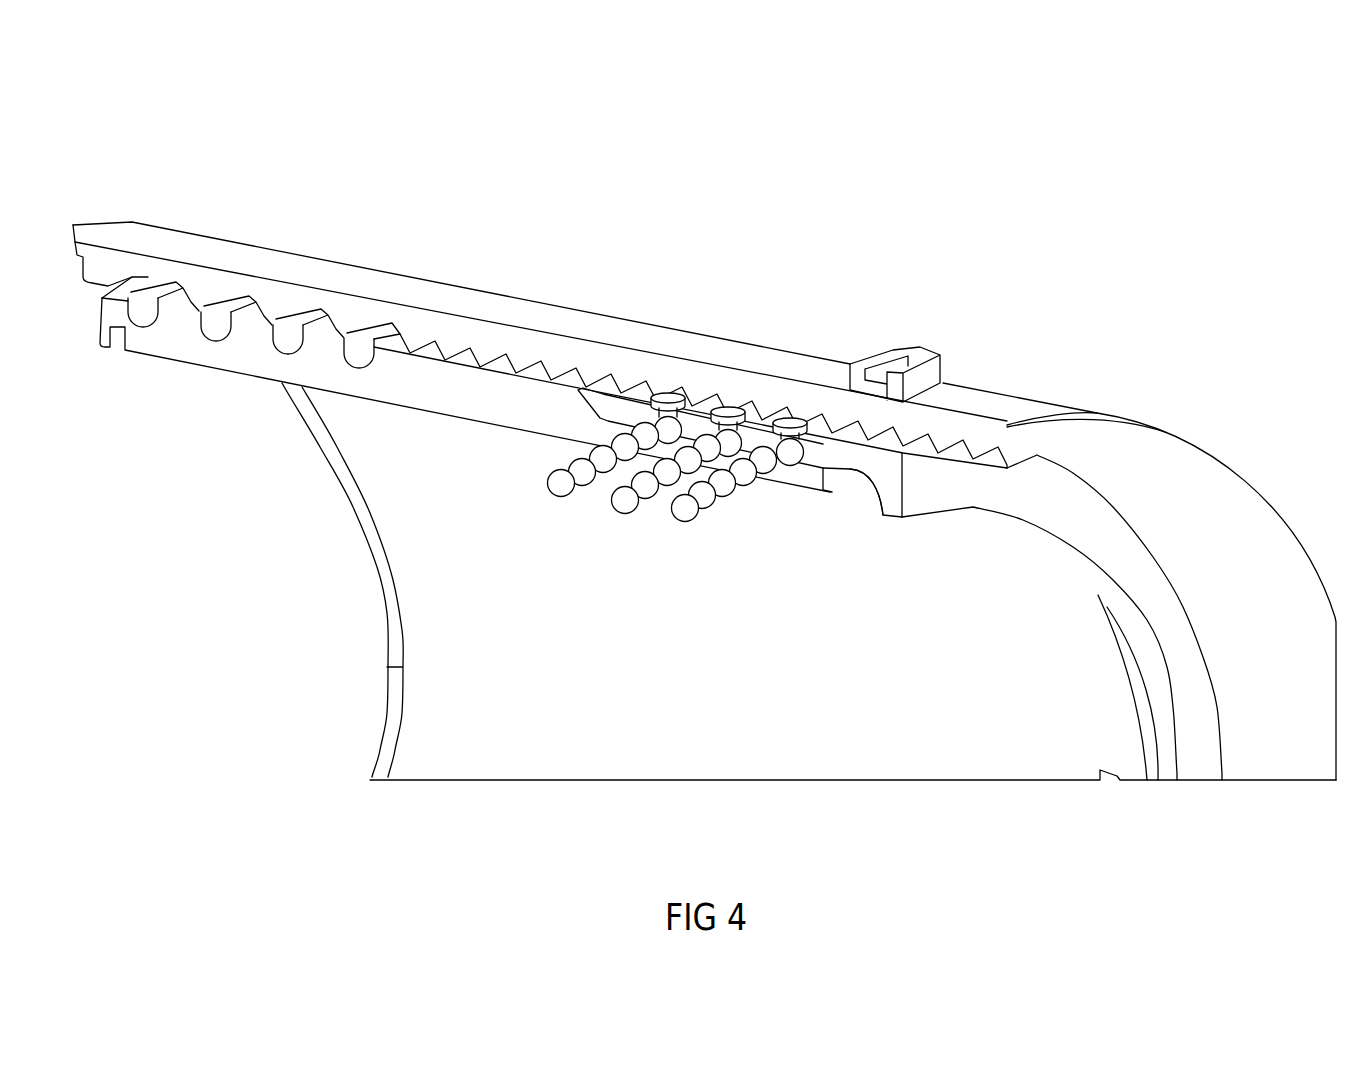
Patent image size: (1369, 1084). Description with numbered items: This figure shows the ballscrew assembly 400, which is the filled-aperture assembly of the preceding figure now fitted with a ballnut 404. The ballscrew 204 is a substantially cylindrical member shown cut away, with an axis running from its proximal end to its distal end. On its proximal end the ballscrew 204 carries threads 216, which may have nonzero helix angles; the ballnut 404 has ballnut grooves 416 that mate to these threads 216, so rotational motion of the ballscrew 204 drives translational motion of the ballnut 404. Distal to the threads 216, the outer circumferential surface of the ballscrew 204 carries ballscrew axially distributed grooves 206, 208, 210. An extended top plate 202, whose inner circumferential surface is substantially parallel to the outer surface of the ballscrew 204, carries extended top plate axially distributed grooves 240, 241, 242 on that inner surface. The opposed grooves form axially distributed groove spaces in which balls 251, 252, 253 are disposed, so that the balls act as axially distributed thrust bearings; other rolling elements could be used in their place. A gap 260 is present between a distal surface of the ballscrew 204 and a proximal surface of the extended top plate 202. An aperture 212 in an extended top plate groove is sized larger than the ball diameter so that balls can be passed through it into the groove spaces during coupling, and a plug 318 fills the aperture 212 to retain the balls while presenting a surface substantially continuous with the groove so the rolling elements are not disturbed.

The ballscrew assembly 400 is at (189, 150).
The ballnut 404 is at (343, 280).
The ballnut grooves 416 is at (217, 303).
The threads 216 is at (250, 312).
The ballscrew 204 is at (400, 377).
The plug 318 is at (565, 643).
The extended top plate axially distributed groove 240 is at (633, 549).
The extended top plate axially distributed groove 241 is at (707, 548).
The extended top plate axially distributed groove 242 is at (811, 463).
The aperture 212 is at (782, 420).
The extended top plate 202 is at (1000, 470).
The gap 260 is at (860, 496).
The ballscrew axially distributed groove 206 is at (623, 505).
The ballscrew axially distributed groove 208 is at (688, 519).
The ballscrew axially distributed groove 210 is at (811, 463).
The ball 251 is at (566, 492).
The ball 252 is at (619, 512).
The ball 253 is at (686, 519).